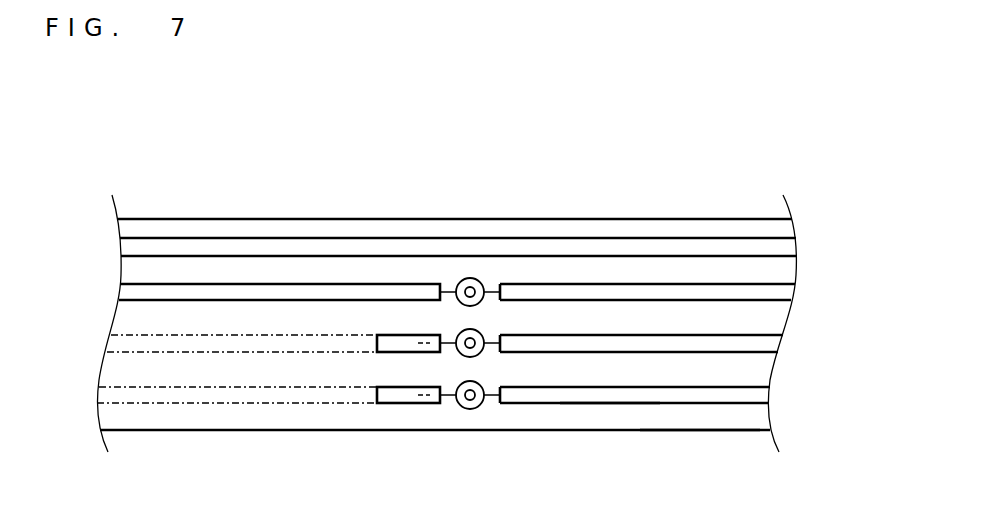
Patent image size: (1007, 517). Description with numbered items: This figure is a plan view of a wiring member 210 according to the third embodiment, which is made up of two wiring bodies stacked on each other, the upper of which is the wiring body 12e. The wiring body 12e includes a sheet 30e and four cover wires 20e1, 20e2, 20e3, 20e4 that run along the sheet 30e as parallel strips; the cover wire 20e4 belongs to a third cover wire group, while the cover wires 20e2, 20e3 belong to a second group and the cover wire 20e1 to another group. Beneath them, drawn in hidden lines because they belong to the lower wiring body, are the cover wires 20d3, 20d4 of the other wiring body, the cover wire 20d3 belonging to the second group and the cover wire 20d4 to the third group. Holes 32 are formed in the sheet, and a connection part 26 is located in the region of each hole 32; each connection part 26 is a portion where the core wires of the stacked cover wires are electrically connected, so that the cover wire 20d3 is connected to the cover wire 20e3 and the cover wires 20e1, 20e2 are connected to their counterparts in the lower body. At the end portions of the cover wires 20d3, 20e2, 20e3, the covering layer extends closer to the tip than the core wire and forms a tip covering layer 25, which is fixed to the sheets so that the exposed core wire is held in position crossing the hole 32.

The wiring member 210 is at (137, 126).
The connection part 26 is at (472, 278).
The cover wire 20e4 is at (627, 248).
The cover wire 20e1 is at (781, 289).
The cover wire 20e2 is at (768, 343).
The cover wire 20e3 is at (755, 394).
The cover wire 20d3 is at (200, 403).
The cover wire 20d4 is at (293, 352).
The tip covering layer 25 is at (398, 343).
The hole 32 is at (482, 407).
The sheet 30e is at (613, 422).
The wiring body 12e is at (698, 436).